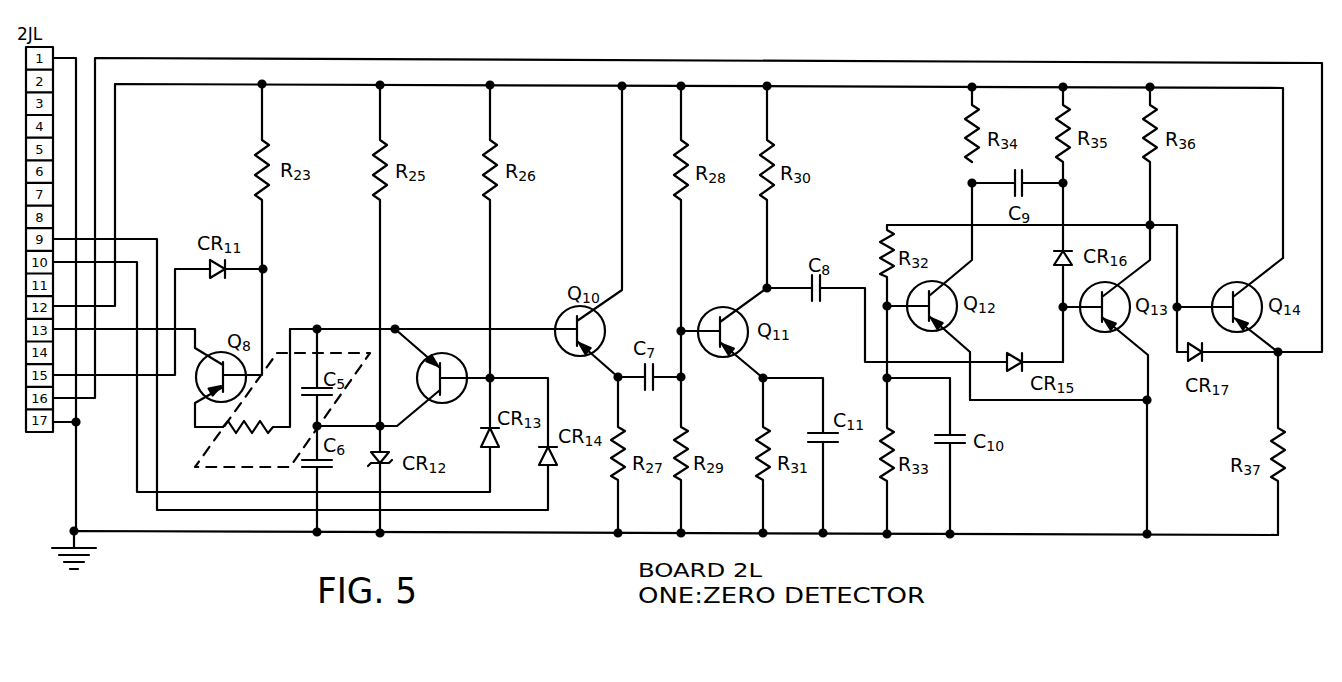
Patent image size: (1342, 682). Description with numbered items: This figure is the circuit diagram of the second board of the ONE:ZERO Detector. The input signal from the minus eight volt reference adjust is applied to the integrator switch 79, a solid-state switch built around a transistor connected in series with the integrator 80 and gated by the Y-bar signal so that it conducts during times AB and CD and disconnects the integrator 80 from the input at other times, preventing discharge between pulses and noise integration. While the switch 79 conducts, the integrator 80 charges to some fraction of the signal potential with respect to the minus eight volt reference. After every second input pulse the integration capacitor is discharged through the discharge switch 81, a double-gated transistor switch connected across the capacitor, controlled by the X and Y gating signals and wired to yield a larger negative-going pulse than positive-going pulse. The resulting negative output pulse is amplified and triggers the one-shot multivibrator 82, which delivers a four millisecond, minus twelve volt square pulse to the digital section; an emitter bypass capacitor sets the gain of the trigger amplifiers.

The integrator switch 79 is at (306, 319).
The integrator 80 is at (216, 442).
The discharge switch 81 is at (450, 340).
The one-shot multivibrator 82 is at (1083, 405).